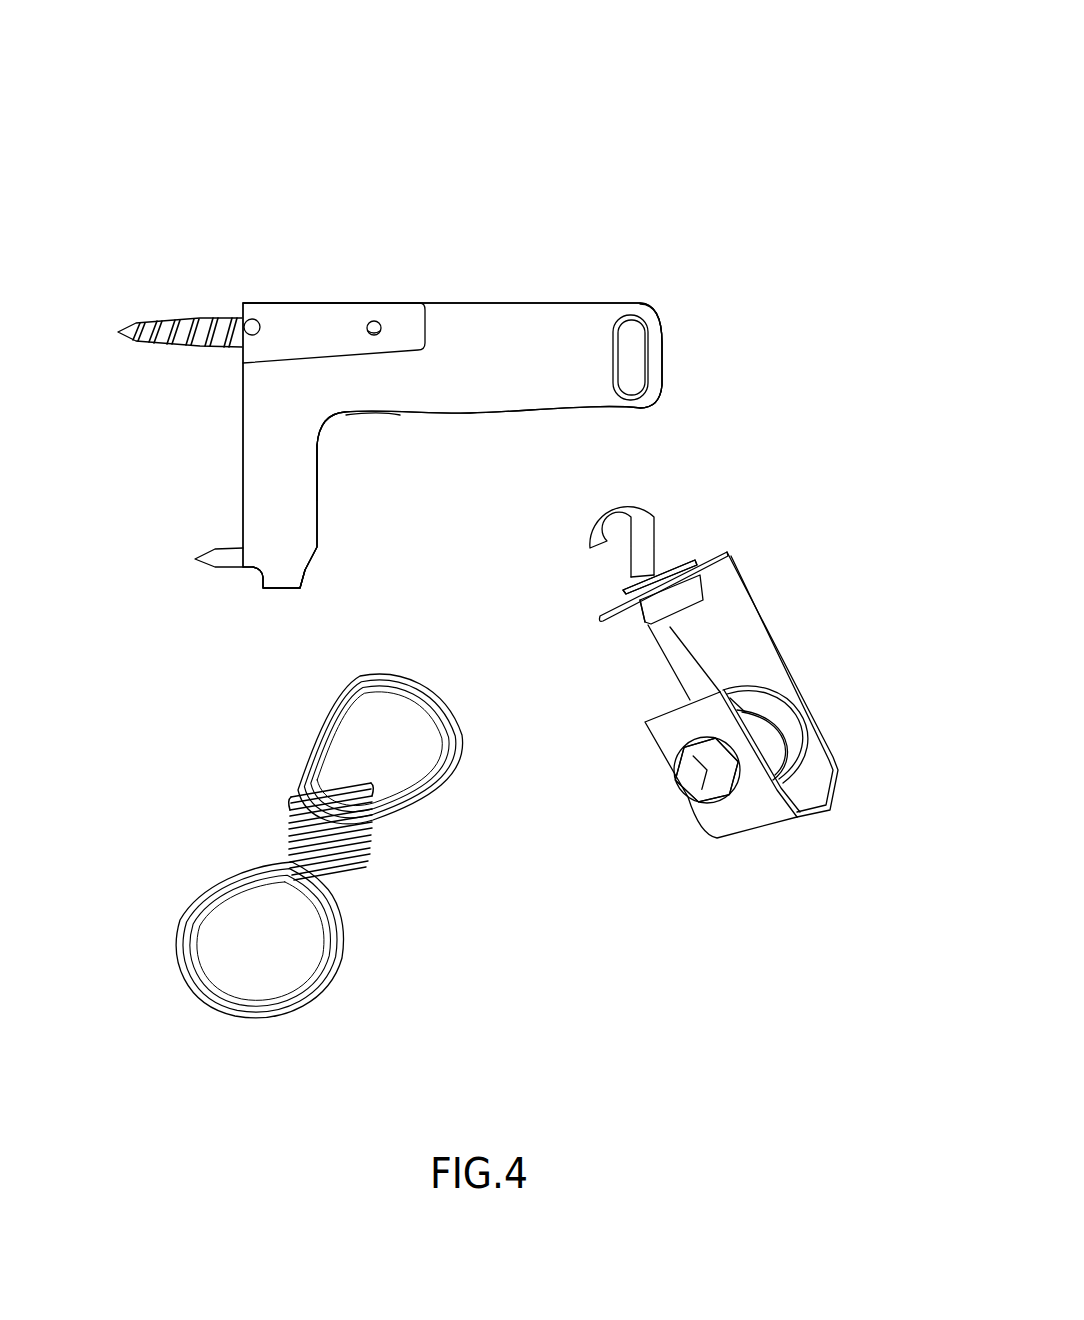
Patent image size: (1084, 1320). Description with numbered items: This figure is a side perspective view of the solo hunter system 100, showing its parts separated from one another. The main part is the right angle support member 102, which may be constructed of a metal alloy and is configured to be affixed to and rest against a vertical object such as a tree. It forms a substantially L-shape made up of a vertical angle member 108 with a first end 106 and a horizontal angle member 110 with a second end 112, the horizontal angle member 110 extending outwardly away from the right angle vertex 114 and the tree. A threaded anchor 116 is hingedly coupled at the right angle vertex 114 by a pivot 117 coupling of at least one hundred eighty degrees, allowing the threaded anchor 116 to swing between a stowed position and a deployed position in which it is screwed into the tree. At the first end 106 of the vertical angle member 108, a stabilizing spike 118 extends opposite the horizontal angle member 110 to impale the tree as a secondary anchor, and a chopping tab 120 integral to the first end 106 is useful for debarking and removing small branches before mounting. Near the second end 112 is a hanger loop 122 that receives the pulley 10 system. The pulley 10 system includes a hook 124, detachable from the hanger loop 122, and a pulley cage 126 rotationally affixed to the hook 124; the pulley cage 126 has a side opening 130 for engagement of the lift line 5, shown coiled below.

The solo hunter system 100 is at (653, 131).
The right angle support member 102 is at (397, 291).
The first end 106 is at (312, 570).
The vertical angle member 108 is at (282, 473).
The horizontal angle member 110 is at (505, 325).
The second end 112 is at (662, 323).
The right angle vertex 114 is at (242, 306).
The threaded anchor 116 is at (147, 318).
The pivot coupling 117 is at (262, 322).
The stabilizing spike 118 is at (210, 552).
The chopping tab 120 is at (272, 575).
The hanger loop 122 is at (636, 362).
The hook 124 is at (648, 506).
The pulley cage 126 is at (735, 618).
The side opening 130 is at (636, 707).
The pulley system 10 is at (788, 710).
The lift line 5 is at (370, 850).